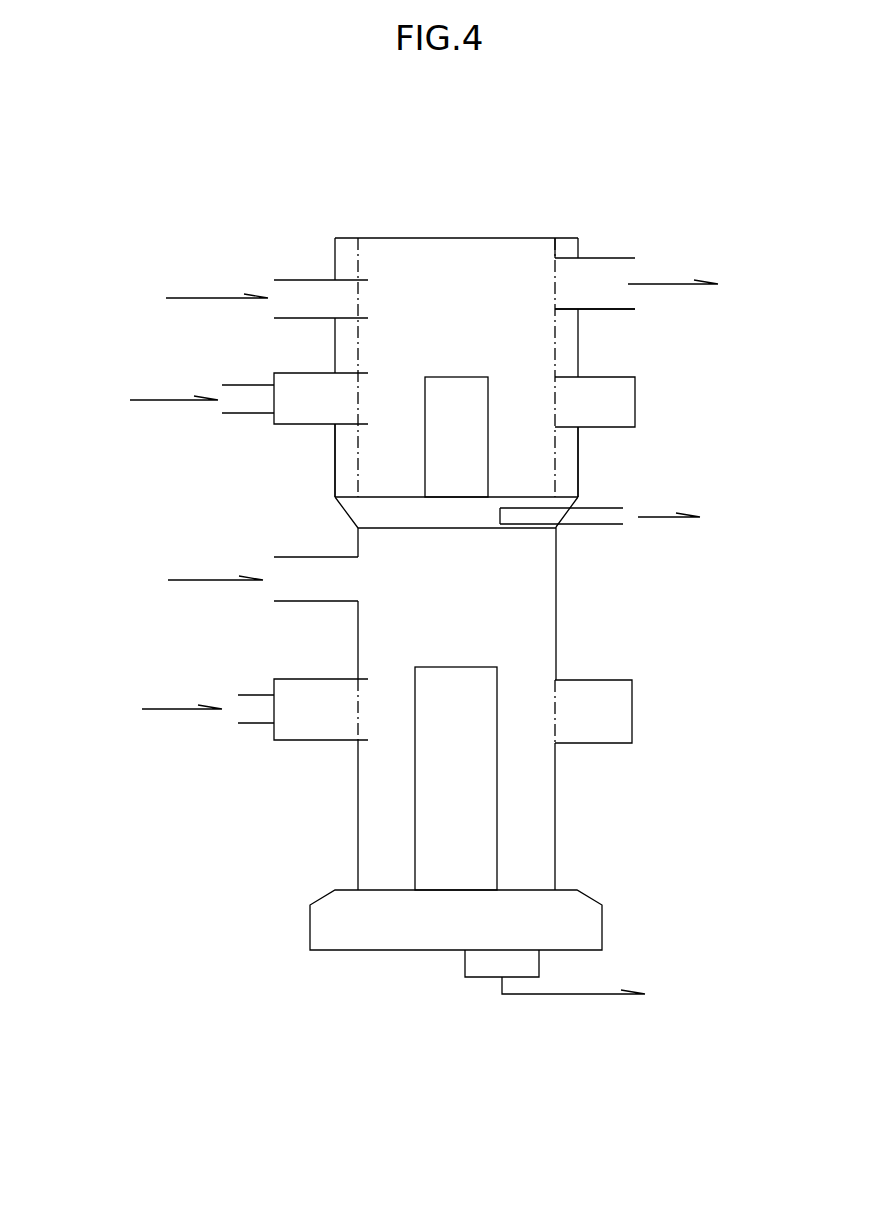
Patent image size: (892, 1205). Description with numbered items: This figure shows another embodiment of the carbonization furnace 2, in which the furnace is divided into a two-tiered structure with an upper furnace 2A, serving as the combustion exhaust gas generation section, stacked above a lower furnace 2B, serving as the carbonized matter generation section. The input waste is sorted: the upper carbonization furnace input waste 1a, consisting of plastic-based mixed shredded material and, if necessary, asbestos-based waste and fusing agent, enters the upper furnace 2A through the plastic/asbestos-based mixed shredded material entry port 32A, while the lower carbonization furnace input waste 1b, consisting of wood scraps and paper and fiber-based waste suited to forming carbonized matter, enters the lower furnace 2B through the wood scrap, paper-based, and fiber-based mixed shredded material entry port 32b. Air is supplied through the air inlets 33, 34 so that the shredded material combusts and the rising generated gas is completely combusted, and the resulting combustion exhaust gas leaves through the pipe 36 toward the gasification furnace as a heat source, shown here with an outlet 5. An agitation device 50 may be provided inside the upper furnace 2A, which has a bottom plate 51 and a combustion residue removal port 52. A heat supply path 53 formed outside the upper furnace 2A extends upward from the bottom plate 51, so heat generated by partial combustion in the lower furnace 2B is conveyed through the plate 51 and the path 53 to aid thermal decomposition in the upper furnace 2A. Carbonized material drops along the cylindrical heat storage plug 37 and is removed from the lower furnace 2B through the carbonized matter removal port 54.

The carbonization furnace 2 is at (425, 237).
The upper furnace 2A is at (507, 257).
The lower furnace 2B is at (543, 612).
The gas outlet 5 is at (587, 278).
The upper carbonization furnace input waste 1a is at (200, 298).
The lower carbonization furnace input waste 1b is at (210, 580).
The plastic/asbestos-based mixed shredded material entry port 32A is at (295, 280).
The wood scrap, paper-based, and fiber-based mixed shredded material entry port 32b is at (290, 557).
The air inlet 33 is at (605, 678).
The air inlet 34 is at (630, 395).
The pipe 36 is at (612, 307).
The cylindrical heat storage plug 37 is at (456, 778).
The agitation device 50 is at (456, 437).
The bottom plate 51 is at (370, 508).
The combustion residue removal port 52 is at (593, 522).
The heat supply path 53 is at (342, 472).
The carbonized matter removal port 54 is at (472, 970).